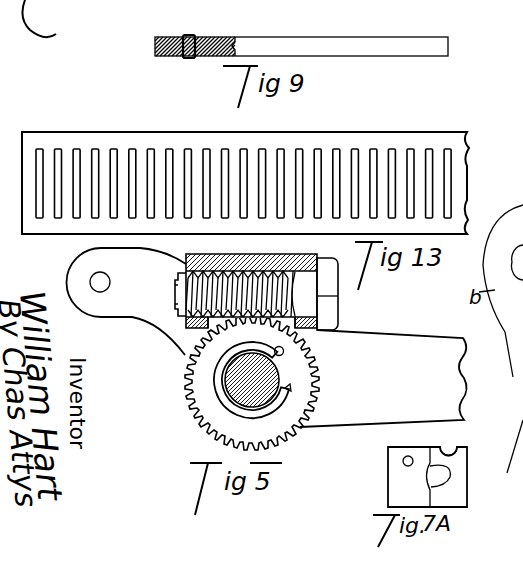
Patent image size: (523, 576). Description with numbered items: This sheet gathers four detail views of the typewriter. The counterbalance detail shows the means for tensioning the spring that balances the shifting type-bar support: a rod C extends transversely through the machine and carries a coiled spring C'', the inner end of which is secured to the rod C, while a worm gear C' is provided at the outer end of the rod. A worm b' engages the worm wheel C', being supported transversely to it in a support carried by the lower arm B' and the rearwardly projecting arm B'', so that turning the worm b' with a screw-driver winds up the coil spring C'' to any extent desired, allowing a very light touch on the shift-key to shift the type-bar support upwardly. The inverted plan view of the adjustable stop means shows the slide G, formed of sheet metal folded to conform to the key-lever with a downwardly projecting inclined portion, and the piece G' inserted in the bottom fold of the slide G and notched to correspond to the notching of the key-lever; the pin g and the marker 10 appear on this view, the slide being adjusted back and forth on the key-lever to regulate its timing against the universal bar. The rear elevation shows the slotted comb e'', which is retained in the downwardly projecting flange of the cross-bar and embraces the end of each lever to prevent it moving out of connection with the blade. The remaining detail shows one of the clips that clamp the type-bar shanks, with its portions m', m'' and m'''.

In FIG. 9, the adjustable slide G is at (301, 33).
In FIG. 9, the notched piece G' is at (197, 34).
In FIG. 9, the pin g is at (185, 37).
In FIG. 9, the pin head 10 is at (198, 9).
In FIG. 13, the comb e'' is at (245, 168).
In FIG. 5, the projecting arm B'' is at (127, 301).
In FIG. 5, the worm b' is at (274, 292).
In FIG. 5, the lower arm B' is at (383, 378).
In FIG. 5, the rod C is at (222, 380).
In FIG. 5, the worm gear C' is at (244, 383).
In FIG. 5, the coiled spring C'' is at (294, 369).
In FIG. 7A, the block m' is at (445, 478).
In FIG. 7A, the key tongue m'' is at (463, 477).
In FIG. 7A, the notch m''' is at (469, 439).